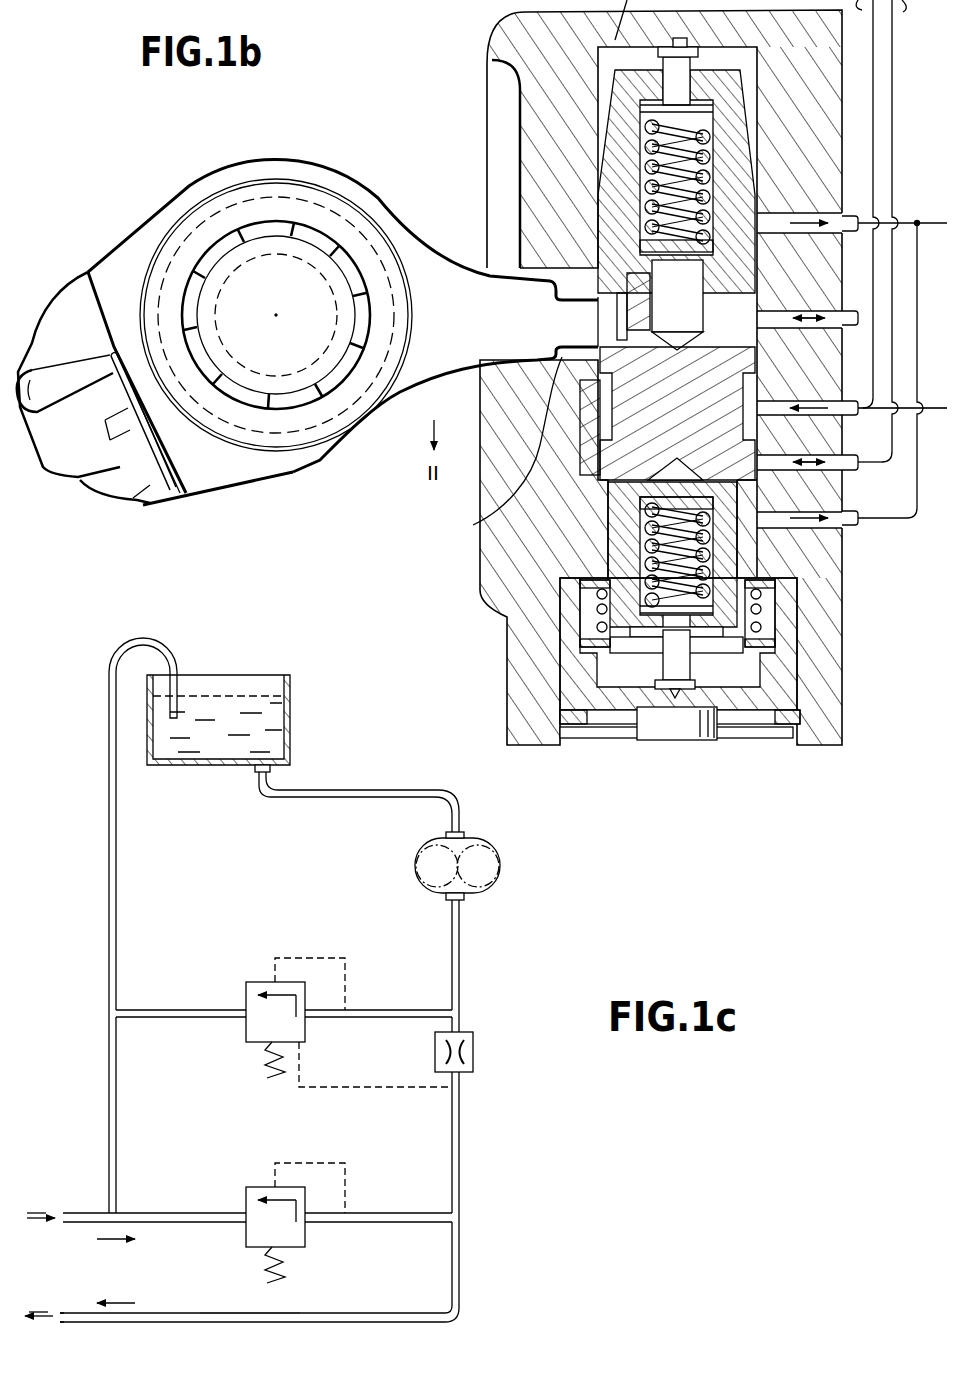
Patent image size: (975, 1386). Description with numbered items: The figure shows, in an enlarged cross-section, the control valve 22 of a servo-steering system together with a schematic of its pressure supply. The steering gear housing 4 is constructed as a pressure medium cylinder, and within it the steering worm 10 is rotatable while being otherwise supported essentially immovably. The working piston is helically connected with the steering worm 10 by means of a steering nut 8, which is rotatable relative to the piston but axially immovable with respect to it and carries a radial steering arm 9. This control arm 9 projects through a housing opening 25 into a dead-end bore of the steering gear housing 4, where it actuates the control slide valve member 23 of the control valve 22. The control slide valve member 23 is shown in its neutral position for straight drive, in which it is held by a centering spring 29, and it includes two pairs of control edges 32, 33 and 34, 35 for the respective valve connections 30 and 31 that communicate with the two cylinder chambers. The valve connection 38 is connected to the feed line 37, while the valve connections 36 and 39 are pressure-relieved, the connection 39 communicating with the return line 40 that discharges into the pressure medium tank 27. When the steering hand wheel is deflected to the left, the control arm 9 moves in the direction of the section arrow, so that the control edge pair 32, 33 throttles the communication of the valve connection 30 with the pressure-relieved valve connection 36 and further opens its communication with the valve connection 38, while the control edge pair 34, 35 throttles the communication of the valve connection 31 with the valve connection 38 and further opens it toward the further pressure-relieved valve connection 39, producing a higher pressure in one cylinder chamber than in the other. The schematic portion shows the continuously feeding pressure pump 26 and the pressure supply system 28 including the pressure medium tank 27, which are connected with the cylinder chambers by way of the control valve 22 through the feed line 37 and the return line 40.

In FIG. 1b, the steering gear housing 4 is at (830, 645).
In FIG. 1b, the steering nut 8 is at (293, 462).
In FIG. 1b, the steering arm 9 is at (500, 297).
In FIG. 1b, the steering worm 10 is at (247, 278).
In FIG. 1b, the control valve 22 is at (687, 743).
In FIG. 1b, the control slide valve member 23 is at (617, 160).
In FIG. 1b, the housing opening 25 is at (581, 310).
In FIG. 1c, the pressure pump 26 is at (497, 877).
In FIG. 1c, the pressure medium tank 27 is at (247, 710).
In FIG. 1c, the pressure supply system 28 is at (93, 805).
In FIG. 1b, the centering spring 29 is at (602, 620).
In FIG. 1b, the valve connection 30 is at (845, 468).
In FIG. 1b, the valve connection 31 is at (838, 327).
In FIG. 1b, the control edge 32 is at (517, 520).
In FIG. 1b, the control edge 33 is at (607, 433).
In FIG. 1b, the control edge 34 is at (703, 280).
In FIG. 1b, the control edge 35 is at (747, 380).
In FIG. 1b, the pressure-relieved valve connection 36 is at (847, 527).
In FIG. 1b, the feed line 37 is at (935, 417).
In FIG. 1c, the feed line 37 is at (208, 1319).
In FIG. 1b, the valve connection 38 is at (843, 414).
In FIG. 1c, the valve connection 38 is at (44, 1306).
In FIG. 1b, the pressure-relieved valve connection 39 is at (807, 210).
In FIG. 1c, the pressure-relieved valve connection 39 is at (239, 1207).
In FIG. 1b, the return line 40 is at (937, 210).
In FIG. 1c, the return line 40 is at (108, 1088).